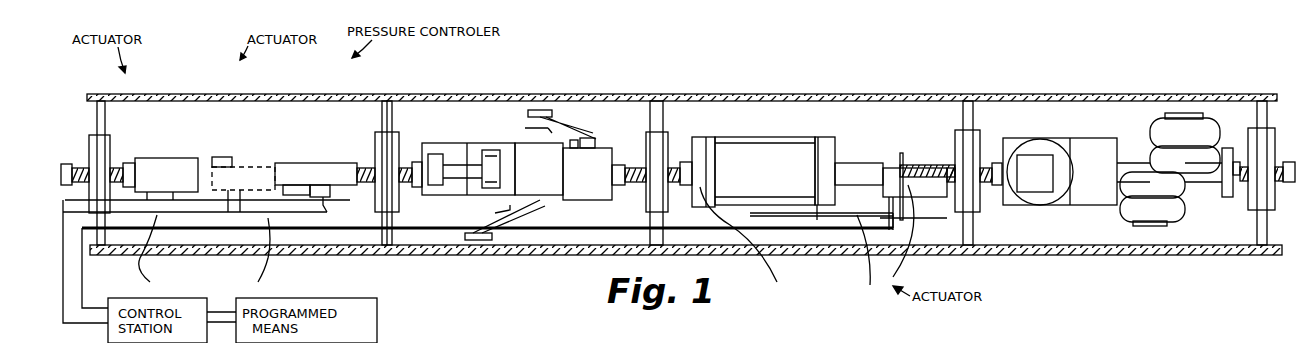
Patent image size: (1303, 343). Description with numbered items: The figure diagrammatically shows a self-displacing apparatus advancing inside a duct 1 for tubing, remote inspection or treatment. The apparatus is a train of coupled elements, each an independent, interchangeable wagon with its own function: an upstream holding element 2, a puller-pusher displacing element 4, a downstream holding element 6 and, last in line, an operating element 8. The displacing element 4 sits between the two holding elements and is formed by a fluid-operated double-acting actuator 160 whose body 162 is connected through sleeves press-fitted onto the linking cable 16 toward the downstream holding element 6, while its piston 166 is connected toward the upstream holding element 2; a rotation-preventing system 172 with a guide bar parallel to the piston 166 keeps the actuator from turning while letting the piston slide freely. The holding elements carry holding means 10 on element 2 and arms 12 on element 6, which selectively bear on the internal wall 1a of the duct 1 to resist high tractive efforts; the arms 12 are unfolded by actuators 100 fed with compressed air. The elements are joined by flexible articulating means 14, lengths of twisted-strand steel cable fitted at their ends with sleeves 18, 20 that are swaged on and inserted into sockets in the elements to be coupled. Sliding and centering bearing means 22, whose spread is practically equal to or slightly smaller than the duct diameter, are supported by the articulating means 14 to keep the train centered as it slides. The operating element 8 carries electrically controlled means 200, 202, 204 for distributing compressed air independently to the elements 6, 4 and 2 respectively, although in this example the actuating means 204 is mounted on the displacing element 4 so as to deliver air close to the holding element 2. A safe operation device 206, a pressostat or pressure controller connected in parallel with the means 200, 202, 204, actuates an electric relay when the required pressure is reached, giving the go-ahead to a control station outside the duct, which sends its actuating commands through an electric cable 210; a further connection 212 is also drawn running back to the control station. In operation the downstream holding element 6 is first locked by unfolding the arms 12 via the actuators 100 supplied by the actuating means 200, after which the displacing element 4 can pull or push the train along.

The duct 1 is at (471, 94).
The internal wall 1a is at (393, 108).
The upstream holding element 2 is at (1087, 132).
The displacing element 4 is at (763, 133).
The downstream holding element 6 is at (508, 130).
The operating element 8 is at (203, 140).
The holding means 10 is at (1170, 136).
The holding means 12 is at (570, 115).
The articulating means 14 is at (405, 188).
The linking cable 16 is at (405, 165).
The sleeve 18 is at (1240, 188).
The sleeve 20 is at (995, 185).
The sliding and centering bearing means 22 is at (668, 118).
The actuators 100 is at (498, 172).
The fluid-operated double-acting actuator 160 is at (788, 170).
The actuator body 162 is at (758, 238).
The piston 166 is at (847, 172).
The rotation-preventing system 172 is at (821, 256).
The actuating means 200 is at (148, 170).
The actuating means 202 is at (230, 170).
The actuating means 204 is at (917, 215).
The safe operation device 206 is at (312, 178).
The electric cable 210 is at (176, 263).
The control line 212 is at (123, 261).